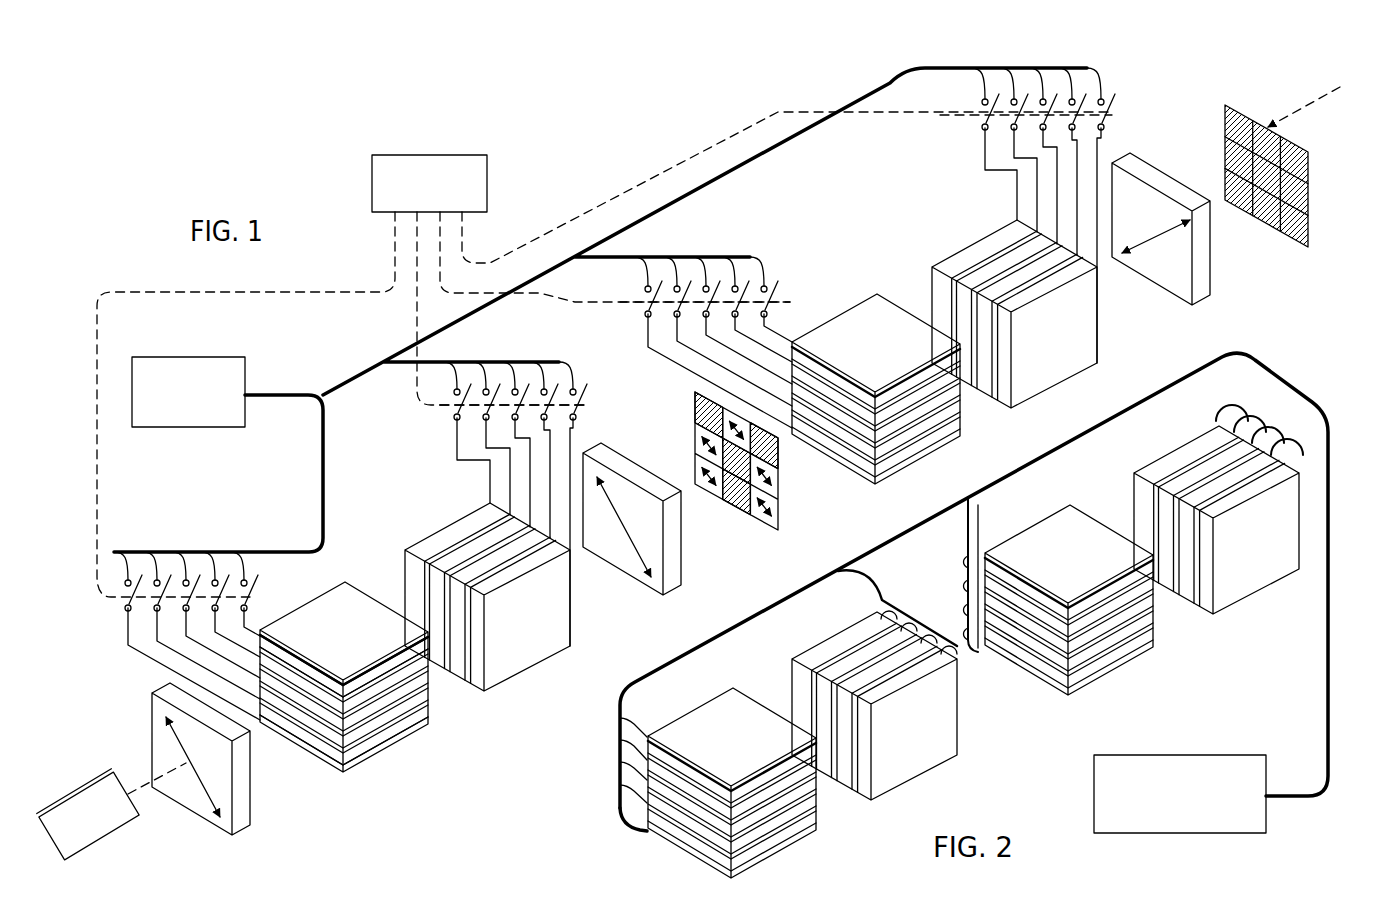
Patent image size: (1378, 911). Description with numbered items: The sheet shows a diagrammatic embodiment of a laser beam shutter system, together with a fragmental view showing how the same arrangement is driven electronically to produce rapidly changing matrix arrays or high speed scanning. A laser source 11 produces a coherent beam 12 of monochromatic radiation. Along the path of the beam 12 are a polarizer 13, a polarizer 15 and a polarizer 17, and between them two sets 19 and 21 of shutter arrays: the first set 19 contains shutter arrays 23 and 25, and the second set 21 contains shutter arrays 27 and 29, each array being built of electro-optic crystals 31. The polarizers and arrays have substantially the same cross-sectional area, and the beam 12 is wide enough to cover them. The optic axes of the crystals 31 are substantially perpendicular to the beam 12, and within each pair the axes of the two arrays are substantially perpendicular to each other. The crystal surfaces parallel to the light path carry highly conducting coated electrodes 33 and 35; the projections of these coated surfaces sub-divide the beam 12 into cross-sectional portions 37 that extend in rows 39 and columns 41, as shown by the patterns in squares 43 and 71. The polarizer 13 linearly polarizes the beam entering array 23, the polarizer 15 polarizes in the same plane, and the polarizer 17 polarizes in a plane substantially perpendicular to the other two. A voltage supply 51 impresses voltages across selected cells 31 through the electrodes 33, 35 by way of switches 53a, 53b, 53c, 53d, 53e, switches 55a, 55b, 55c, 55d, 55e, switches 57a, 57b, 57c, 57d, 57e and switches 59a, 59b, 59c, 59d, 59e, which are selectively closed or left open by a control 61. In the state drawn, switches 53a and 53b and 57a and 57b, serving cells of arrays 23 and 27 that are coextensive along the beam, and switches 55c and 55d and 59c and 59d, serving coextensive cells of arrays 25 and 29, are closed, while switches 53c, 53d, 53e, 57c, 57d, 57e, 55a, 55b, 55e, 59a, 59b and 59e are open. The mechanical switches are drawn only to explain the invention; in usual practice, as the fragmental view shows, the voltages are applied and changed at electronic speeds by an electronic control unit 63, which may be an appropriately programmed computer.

In FIG. 1, the laser source 11 is at (101, 838).
In FIG. 1, the coherent beam 12 is at (135, 791).
In FIG. 1, the polarizer 13 is at (242, 814).
In FIG. 1, the polarizer 15 is at (657, 588).
In FIG. 1, the polarizer 17 is at (1165, 278).
In FIG. 1, the set of shutter arrays 19 is at (415, 636).
In FIG. 2, the set of shutter arrays 19 is at (844, 853).
In FIG. 1, the set of shutter arrays 21 is at (944, 350).
In FIG. 2, the set of shutter arrays 21 is at (1179, 665).
In FIG. 1, the shutter array 23 is at (320, 586).
In FIG. 1, the shutter array 25 is at (450, 527).
In FIG. 1, the shutter array 27 is at (862, 307).
In FIG. 1, the shutter array 29 is at (973, 240).
In FIG. 1, the electro-optic crystal 31 is at (391, 734).
In FIG. 1, the electrode 33 is at (388, 661).
In FIG. 1, the electrode 35 is at (298, 674).
In FIG. 1, the cross-sectional portion 37 is at (695, 430).
In FIG. 1, the row 39 is at (1000, 370).
In FIG. 1, the column 41 is at (745, 518).
In FIG. 1, the square 43 is at (767, 530).
In FIG. 1, the voltage supply 51 is at (247, 372).
In FIG. 1, the switch 53a is at (250, 601).
In FIG. 1, the switch 53b is at (234, 580).
In FIG. 1, the switch 53c is at (205, 578).
In FIG. 1, the switch 53d is at (162, 584).
In FIG. 1, the switch 53e is at (126, 598).
In FIG. 1, the switch 55a is at (585, 404).
In FIG. 1, the switch 55b is at (558, 390).
In FIG. 1, the switch 55c is at (528, 388).
In FIG. 1, the switch 55d is at (500, 388).
In FIG. 1, the switch 55e is at (456, 410).
In FIG. 1, the switch 57a is at (778, 304).
In FIG. 1, the switch 57b is at (750, 287).
In FIG. 1, the switch 57c is at (723, 286).
In FIG. 1, the switch 57d is at (700, 286).
In FIG. 1, the switch 57e is at (645, 303).
In FIG. 1, the switch 59a is at (1118, 117).
In FIG. 1, the switch 59b is at (1087, 102).
In FIG. 1, the switch 59c is at (1054, 99).
In FIG. 1, the switch 59d is at (1028, 99).
In FIG. 1, the switch 59e is at (984, 120).
In FIG. 1, the control 61 is at (488, 178).
In FIG. 2, the electronic control unit 63 is at (1127, 834).
In FIG. 1, the square 71 is at (1318, 243).